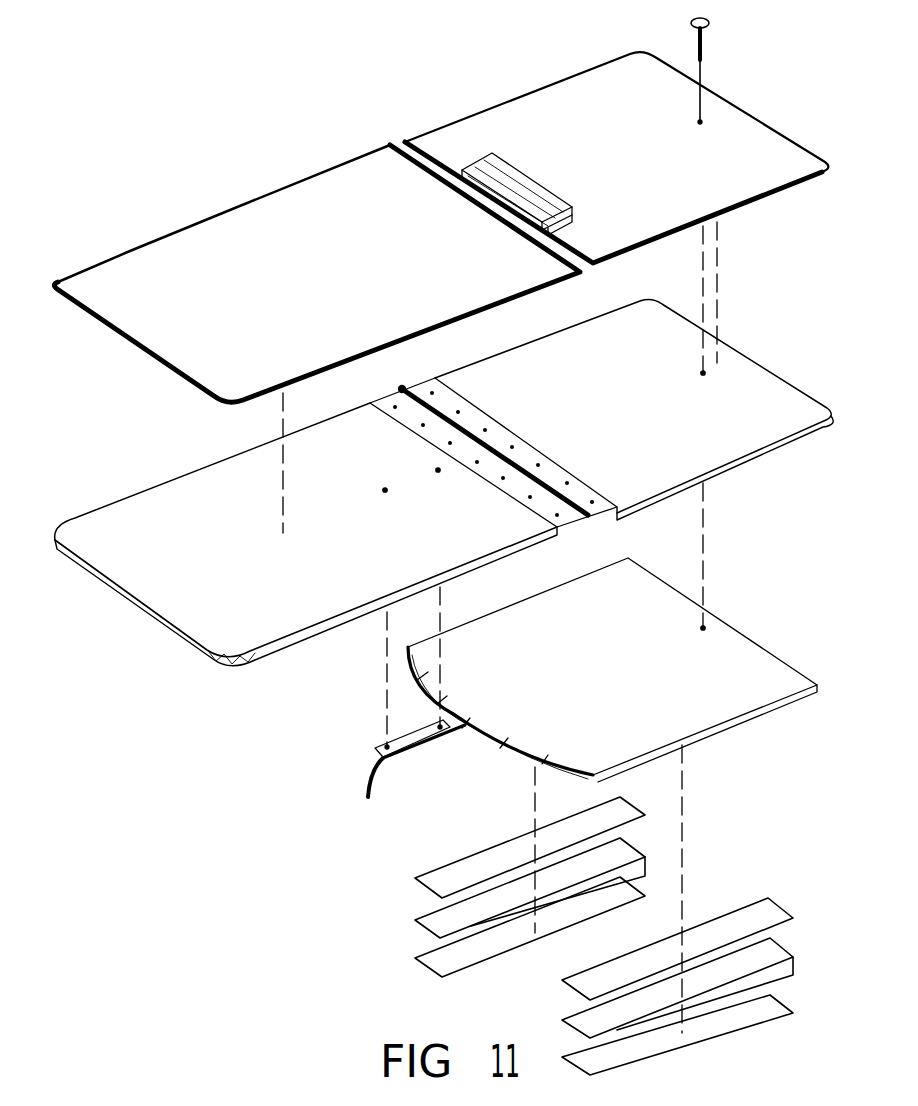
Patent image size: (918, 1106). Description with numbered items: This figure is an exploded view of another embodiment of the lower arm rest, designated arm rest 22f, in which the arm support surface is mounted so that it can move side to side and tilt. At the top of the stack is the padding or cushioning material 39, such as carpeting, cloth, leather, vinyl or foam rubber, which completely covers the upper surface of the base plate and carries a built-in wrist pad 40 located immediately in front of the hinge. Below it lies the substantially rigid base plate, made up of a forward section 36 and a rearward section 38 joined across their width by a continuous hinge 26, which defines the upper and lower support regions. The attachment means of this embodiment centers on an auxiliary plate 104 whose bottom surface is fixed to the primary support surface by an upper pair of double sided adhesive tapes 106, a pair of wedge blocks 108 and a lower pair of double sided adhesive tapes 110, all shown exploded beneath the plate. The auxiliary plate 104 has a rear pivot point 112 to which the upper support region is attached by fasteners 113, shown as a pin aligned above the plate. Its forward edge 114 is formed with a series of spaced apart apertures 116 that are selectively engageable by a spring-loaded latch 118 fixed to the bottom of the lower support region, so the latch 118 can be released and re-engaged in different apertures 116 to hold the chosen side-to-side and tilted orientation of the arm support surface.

The arm rest 22f is at (106, 436).
The padding or cushioning material 39 is at (482, 133).
The built-in wrist pad 40 is at (517, 177).
The fasteners 113 is at (711, 24).
The continuous hinge 26 is at (527, 462).
The forward section 36 is at (713, 420).
The rearward section 38 is at (257, 608).
The auxiliary plate 104 is at (757, 672).
The rear pivot point 112 is at (747, 615).
The forward edge 114 is at (573, 770).
The spaced apart apertures 116 is at (440, 700).
The spring-loaded latch 118 is at (403, 767).
The upper pair of double sided adhesive tapes 106 is at (428, 892).
The wedge blocks 108 is at (428, 930).
The lower pair of double sided adhesive tapes 110 is at (428, 970).